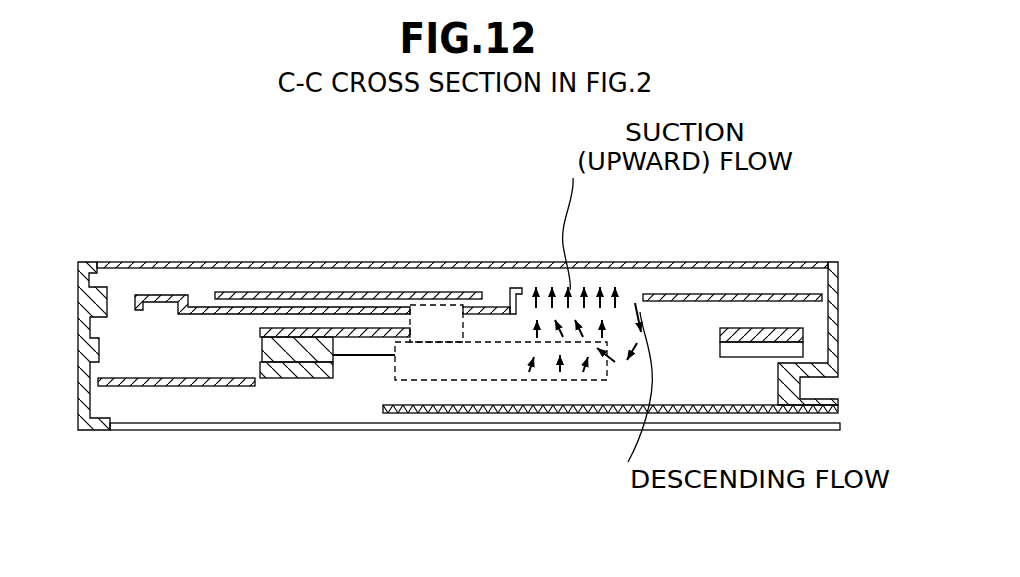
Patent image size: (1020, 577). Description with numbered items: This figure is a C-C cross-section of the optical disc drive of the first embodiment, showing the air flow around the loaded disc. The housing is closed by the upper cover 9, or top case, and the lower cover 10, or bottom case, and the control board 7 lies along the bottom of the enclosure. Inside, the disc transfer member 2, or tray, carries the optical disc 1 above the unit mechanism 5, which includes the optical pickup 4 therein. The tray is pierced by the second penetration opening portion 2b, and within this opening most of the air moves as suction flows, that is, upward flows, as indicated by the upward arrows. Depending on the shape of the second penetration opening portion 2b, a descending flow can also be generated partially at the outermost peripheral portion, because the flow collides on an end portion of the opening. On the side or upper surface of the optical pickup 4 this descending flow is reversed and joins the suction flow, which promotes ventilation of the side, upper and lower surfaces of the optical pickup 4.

The optical disc 1 is at (321, 292).
The disc transfer member 2 is at (186, 296).
The second penetration opening portion 2b is at (543, 288).
The optical pickup 4 is at (507, 368).
The unit mechanism 5 is at (366, 328).
The control board 7 is at (405, 413).
The upper cover 9 is at (283, 262).
The lower cover 10 is at (212, 428).